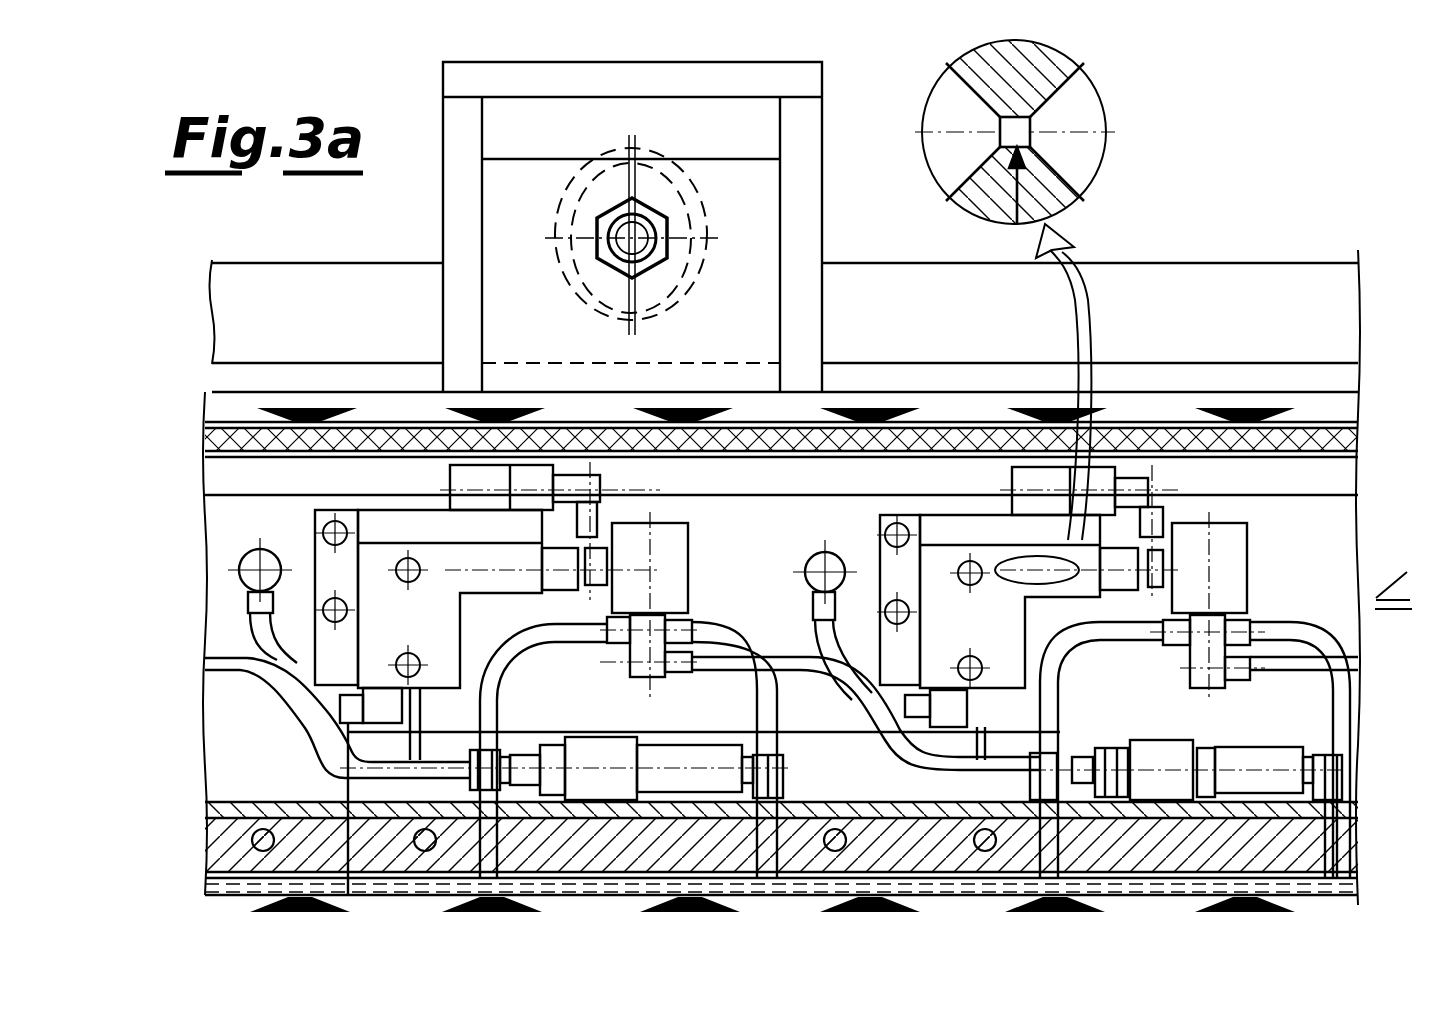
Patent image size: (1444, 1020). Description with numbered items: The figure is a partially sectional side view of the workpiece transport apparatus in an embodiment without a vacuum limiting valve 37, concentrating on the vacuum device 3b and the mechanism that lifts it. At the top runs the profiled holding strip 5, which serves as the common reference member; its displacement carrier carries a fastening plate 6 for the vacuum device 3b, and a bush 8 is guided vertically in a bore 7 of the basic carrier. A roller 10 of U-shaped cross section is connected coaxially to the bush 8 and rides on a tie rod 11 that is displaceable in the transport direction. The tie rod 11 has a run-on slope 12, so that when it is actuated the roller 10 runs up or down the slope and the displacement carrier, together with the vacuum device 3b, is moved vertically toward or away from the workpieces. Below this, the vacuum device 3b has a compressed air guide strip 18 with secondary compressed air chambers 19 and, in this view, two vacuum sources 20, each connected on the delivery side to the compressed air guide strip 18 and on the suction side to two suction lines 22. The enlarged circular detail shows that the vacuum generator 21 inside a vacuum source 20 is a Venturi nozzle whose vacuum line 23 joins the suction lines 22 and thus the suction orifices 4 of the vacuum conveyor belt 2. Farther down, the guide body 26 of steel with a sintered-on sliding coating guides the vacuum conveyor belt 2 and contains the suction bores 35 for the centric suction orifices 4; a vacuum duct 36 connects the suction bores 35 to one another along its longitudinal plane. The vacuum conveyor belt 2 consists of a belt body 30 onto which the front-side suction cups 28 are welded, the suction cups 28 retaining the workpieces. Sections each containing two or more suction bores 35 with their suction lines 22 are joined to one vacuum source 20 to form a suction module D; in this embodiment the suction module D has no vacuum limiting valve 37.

The vacuum conveyor belt 2 is at (230, 888).
The vacuum device 3b is at (1386, 428).
The suction orifices 4 is at (300, 893).
The profiled holding strip 5 is at (845, 138).
The fastening plate 6 is at (742, 180).
The bore 7 is at (612, 166).
The bush 8 is at (602, 206).
The roller 10 is at (707, 208).
The tie rod 11 is at (247, 292).
The run-on slope 12 is at (545, 284).
The compressed air guide strip 18 is at (1370, 540).
The secondary compressed air chambers 19 is at (803, 558).
The vacuum source 20 is at (940, 560).
The vacuum generator 21 is at (985, 170).
The suction lines 22 is at (716, 626).
The vacuum line 23 is at (1066, 198).
The guide body 26 is at (1213, 840).
The suction cups 28 is at (850, 882).
The belt body 30 is at (1345, 870).
The suction bores 35 is at (505, 825).
The vacuum duct 36 is at (581, 865).
The vacuum limiting valve 37 is at (1280, 753).
The suction module D is at (820, 740).